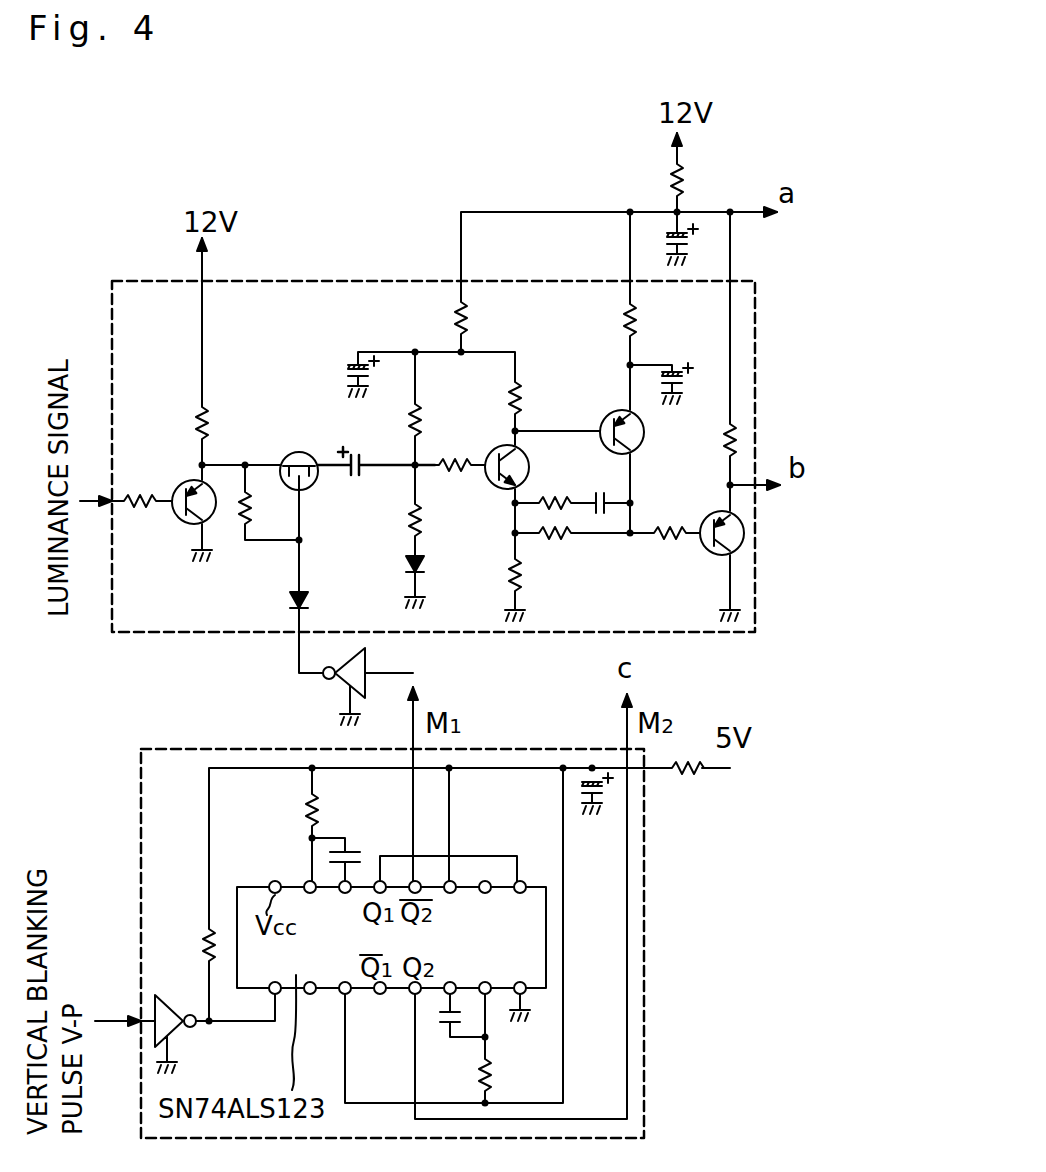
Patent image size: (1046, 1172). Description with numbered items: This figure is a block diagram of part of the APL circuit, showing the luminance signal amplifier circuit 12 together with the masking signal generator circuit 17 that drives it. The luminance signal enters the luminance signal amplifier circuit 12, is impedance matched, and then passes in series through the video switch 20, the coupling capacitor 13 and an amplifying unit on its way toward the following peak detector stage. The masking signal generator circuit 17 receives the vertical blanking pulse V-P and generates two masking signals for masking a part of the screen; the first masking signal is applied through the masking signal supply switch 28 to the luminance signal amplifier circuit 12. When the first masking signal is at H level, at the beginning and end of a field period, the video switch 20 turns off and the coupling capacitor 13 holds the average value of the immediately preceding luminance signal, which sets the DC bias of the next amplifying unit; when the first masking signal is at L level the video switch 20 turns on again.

The luminance signal amplifier circuit 12 is at (323, 280).
The coupling capacitor 13 is at (360, 458).
The masking signal generator circuit 17 is at (646, 1088).
The video switch 20 is at (295, 490).
The masking signal supply switch 28 is at (323, 680).